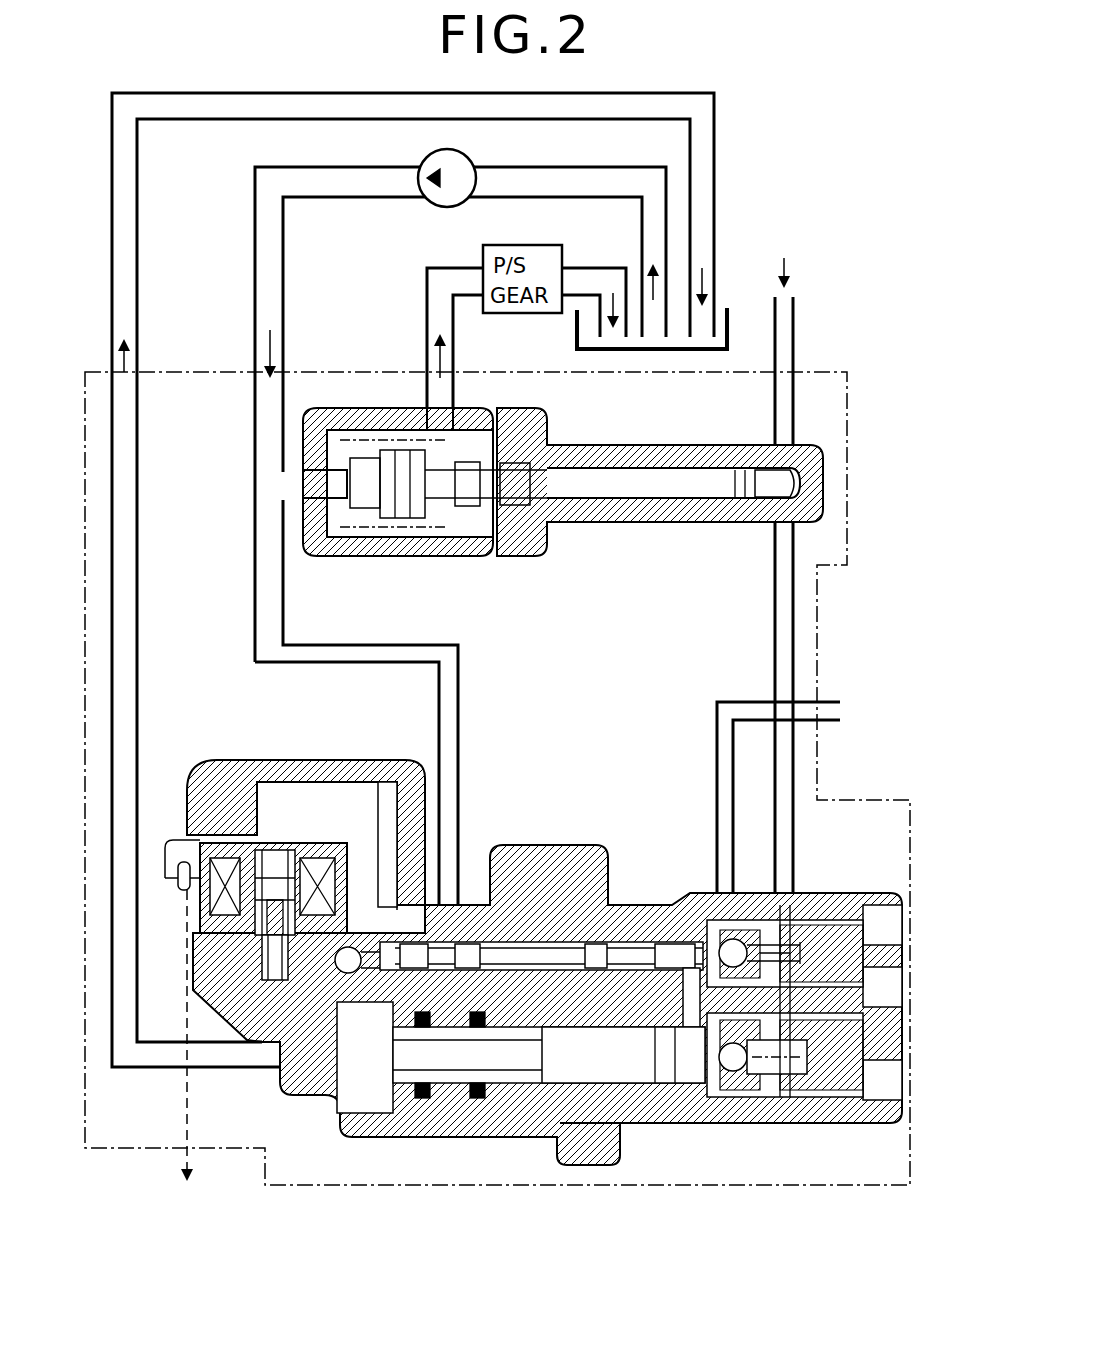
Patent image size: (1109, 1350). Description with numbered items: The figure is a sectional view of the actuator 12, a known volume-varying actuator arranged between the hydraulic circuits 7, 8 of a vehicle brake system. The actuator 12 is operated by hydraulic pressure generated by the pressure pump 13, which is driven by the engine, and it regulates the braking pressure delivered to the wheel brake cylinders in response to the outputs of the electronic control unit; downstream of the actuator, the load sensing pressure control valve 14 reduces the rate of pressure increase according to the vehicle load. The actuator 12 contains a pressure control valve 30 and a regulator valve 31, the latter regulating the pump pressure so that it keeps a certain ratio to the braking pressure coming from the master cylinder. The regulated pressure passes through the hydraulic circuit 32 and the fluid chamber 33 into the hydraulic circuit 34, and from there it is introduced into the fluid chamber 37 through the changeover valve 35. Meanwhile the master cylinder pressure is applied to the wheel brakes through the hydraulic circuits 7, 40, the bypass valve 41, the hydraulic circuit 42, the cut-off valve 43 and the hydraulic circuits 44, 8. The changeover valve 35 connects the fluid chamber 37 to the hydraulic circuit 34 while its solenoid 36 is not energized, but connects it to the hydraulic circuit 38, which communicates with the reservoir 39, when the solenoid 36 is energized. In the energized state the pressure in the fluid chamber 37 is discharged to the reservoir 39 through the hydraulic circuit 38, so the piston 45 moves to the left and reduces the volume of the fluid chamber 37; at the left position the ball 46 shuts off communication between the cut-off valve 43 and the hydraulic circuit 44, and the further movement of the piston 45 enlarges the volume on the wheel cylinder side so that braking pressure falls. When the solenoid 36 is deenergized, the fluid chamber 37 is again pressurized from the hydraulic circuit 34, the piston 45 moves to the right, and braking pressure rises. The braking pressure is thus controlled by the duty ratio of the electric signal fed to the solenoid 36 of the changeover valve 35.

The hydraulic circuit 7 is at (800, 338).
The hydraulic circuit 8 is at (717, 752).
The actuator 12 is at (847, 420).
The pressure pump 13 is at (440, 207).
The load sensing pressure control valve 14 is at (822, 710).
The pressure control valve 30 is at (558, 838).
The regulator valve 31 is at (527, 558).
The hydraulic circuit 32 is at (438, 690).
The fluid chamber 33 is at (392, 990).
The hydraulic circuit 34 is at (283, 782).
The changeover valve 35 is at (247, 943).
The solenoid 36 is at (205, 893).
The fluid chamber 37 is at (350, 1093).
The hydraulic circuit 38 is at (222, 1058).
The reservoir 39 is at (727, 349).
The hydraulic circuit 40 is at (773, 593).
The bypass valve 41 is at (800, 935).
The hydraulic circuit 42 is at (775, 995).
The cut-off valve 43 is at (775, 1060).
The hydraulic circuit 44 is at (690, 1000).
The piston 45 is at (627, 1063).
The ball 46 is at (727, 1065).